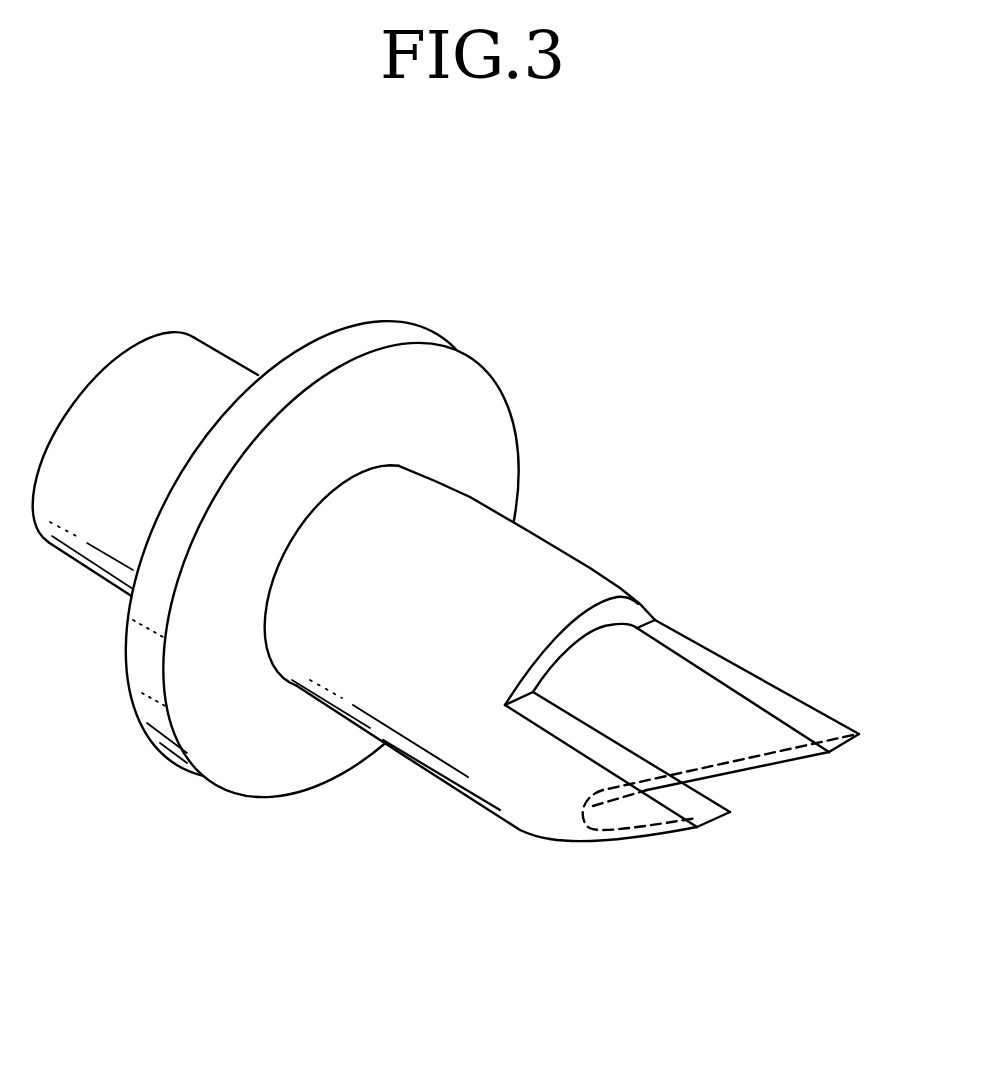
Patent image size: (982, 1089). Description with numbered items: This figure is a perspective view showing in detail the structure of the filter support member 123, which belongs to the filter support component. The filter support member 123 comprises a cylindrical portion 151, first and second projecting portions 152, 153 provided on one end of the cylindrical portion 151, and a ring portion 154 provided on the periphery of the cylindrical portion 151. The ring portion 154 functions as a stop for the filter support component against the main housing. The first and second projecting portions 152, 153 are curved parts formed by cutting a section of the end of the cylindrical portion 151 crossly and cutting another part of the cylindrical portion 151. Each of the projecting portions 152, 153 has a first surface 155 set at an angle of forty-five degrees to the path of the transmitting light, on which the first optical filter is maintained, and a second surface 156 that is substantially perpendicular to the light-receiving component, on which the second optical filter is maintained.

The filter support member 123 is at (670, 278).
The cylindrical portion 151 is at (192, 352).
The first projecting portion 152 is at (553, 812).
The second projecting portion 153 is at (740, 656).
The ring portion 154 is at (387, 332).
The first surface 155 is at (803, 757).
The second surface 156 is at (640, 766).